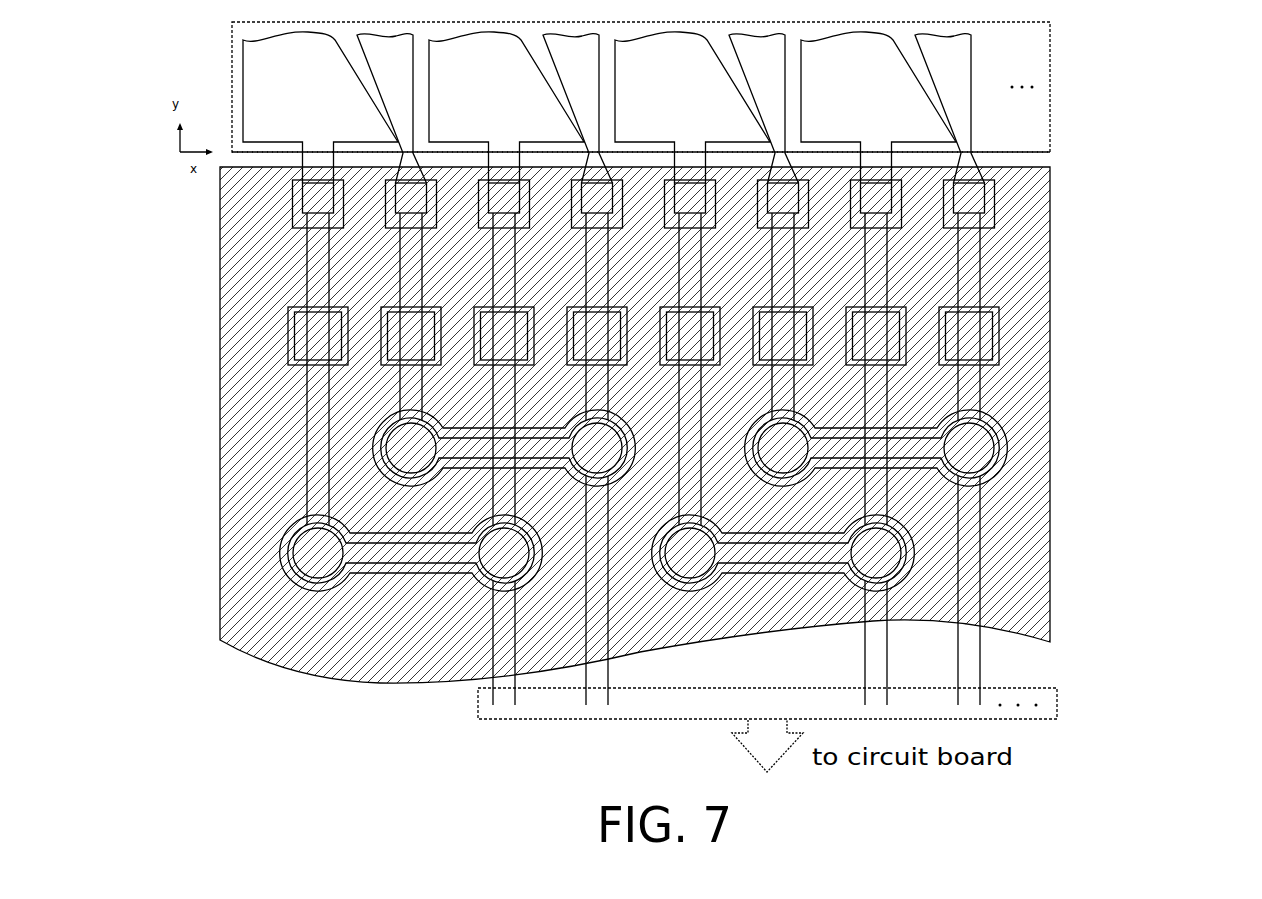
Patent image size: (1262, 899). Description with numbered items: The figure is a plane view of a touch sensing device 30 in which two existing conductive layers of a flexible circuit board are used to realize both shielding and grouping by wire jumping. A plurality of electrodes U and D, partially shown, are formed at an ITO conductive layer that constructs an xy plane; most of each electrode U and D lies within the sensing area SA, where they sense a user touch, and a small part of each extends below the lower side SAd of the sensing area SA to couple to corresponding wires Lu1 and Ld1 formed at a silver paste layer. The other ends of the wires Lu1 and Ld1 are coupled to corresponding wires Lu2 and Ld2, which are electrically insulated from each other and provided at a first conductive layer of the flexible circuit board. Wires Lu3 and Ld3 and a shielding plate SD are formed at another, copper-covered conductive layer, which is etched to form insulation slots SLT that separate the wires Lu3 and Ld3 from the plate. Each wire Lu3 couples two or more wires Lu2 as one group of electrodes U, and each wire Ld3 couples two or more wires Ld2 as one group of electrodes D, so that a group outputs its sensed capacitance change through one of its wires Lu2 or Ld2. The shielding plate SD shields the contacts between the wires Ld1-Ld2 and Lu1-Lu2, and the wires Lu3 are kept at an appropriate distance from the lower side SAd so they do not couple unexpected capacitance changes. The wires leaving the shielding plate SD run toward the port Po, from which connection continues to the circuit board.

The touch sensing device 30 is at (1178, 93).
The sensing area SA is at (1052, 58).
The lower side of the sensing area SAd is at (1053, 153).
The shielding plate SD is at (1052, 247).
The electrode D is at (323, 64).
The electrode U is at (405, 64).
The wire Ld1 is at (702, 263).
The wire Lu1 is at (795, 263).
The wire Ld2 is at (702, 395).
The wire Lu2 is at (795, 395).
The wire Ld3 is at (690, 553).
The wire Lu3 is at (783, 448).
The insulation slot SLT is at (1003, 463).
The connection port Po is at (1059, 704).